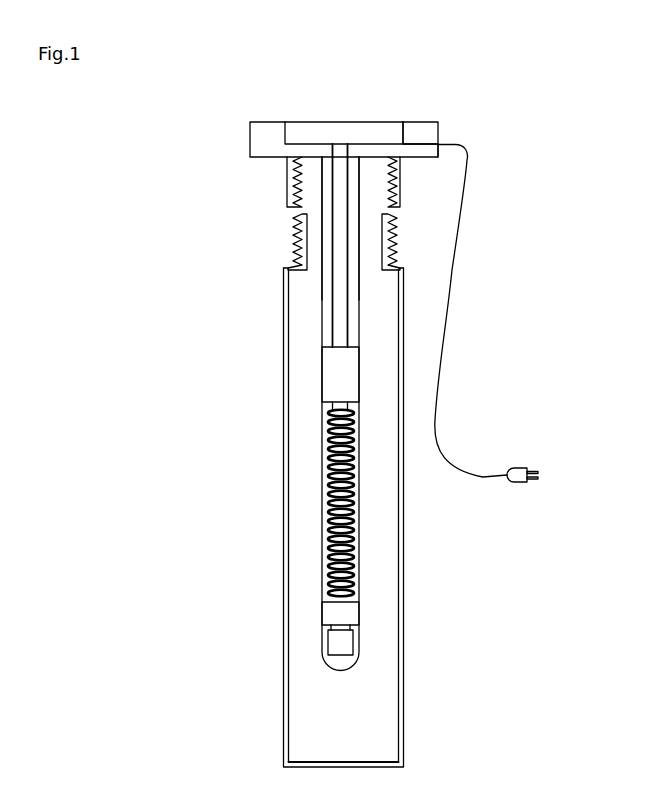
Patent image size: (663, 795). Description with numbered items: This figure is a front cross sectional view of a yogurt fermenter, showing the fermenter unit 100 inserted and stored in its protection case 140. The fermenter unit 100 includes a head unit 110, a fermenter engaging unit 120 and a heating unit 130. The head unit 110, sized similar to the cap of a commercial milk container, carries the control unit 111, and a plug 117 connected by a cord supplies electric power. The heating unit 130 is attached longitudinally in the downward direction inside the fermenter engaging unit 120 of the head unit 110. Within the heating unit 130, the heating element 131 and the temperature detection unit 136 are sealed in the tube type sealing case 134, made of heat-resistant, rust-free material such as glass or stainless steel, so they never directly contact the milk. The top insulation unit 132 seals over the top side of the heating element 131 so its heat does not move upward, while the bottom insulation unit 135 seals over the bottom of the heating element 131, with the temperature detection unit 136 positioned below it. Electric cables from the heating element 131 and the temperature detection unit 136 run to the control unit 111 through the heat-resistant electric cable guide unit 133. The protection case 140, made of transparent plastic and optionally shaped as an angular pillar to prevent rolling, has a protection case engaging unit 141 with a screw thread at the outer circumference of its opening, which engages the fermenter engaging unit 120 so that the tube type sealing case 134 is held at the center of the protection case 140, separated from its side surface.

The fermenter unit 100 is at (257, 141).
The head unit 110 is at (416, 130).
The control unit 111 is at (335, 130).
The plug 117 is at (519, 468).
The fermenter engaging unit 120 is at (292, 180).
The heating unit 130 is at (352, 275).
The heating element 131 is at (356, 532).
The top insulation unit 132 is at (330, 373).
The electric cable guide unit 133 is at (343, 322).
The tube type sealing case 134 is at (327, 533).
The bottom insulation unit 135 is at (332, 620).
The temperature detection unit 136 is at (337, 647).
The protection case 140 is at (400, 690).
The protection case engaging unit 141 is at (297, 236).